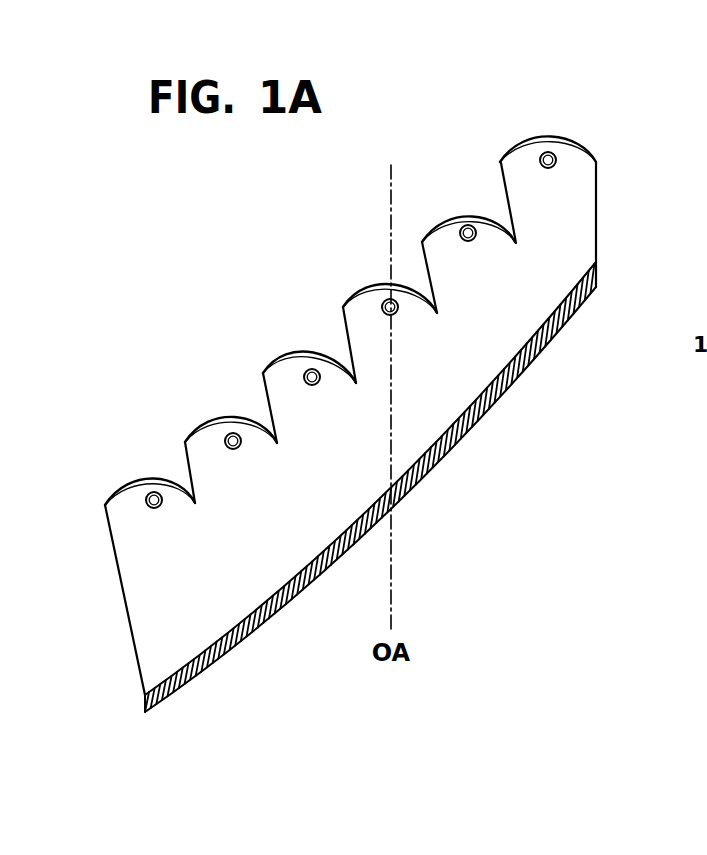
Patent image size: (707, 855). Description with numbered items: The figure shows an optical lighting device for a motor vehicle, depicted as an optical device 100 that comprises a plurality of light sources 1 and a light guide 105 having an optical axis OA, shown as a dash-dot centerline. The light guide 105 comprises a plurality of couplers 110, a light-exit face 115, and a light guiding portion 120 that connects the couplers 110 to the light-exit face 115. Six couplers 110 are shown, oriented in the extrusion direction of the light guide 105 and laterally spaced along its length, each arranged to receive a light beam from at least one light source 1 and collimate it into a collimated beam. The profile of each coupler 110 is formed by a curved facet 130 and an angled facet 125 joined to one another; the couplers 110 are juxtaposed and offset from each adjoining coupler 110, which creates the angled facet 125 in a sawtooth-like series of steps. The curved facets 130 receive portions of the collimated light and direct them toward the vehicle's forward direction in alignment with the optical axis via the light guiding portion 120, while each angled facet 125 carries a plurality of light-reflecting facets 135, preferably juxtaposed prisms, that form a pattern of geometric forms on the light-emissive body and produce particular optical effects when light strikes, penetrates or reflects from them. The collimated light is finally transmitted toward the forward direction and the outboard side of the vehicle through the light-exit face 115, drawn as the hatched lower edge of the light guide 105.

The light source 1 is at (549, 154).
The optical device 100 is at (192, 239).
The light guide 105 is at (597, 186).
The coupler 110 is at (443, 262).
The light-exit face 115 is at (504, 396).
The light guiding portion 120 is at (577, 230).
The angled facet 125 is at (268, 404).
The curved facet 130 is at (143, 478).
The light-reflecting facet 135 is at (512, 232).